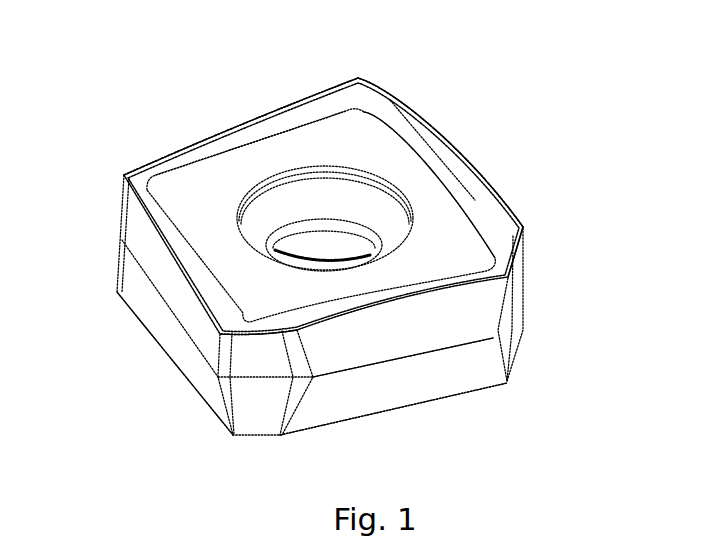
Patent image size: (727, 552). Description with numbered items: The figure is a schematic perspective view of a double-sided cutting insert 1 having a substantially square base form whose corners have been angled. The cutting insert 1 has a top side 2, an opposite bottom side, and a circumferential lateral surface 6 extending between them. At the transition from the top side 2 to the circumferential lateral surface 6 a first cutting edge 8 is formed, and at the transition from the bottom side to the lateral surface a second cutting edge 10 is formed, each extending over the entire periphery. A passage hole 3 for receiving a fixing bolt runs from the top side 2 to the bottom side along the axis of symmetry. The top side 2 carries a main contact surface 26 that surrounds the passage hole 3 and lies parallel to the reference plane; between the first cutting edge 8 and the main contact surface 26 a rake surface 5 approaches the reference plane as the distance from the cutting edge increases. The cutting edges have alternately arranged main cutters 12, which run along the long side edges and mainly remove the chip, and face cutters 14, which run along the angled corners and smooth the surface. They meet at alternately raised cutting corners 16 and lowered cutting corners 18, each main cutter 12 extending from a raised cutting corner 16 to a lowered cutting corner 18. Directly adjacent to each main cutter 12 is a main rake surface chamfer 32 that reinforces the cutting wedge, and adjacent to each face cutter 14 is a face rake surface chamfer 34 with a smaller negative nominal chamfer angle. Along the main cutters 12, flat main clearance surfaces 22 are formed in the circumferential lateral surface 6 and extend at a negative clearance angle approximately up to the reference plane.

The double-sided cutting insert 1 is at (150, 70).
The top side 2 is at (390, 150).
The passage hole 3 is at (320, 263).
The rake surface 5 is at (332, 97).
The circumferential lateral surface 6 is at (377, 373).
The first cutting edge 8 is at (457, 148).
The second cutting edge 10 is at (388, 410).
The main cutter 12 is at (233, 126).
The face cutter 14 is at (388, 92).
The raised cutting corner 16 is at (358, 78).
The lowered cutting corner 18 is at (407, 99).
The main clearance surface 22 is at (160, 272).
The main contact surface 26 is at (297, 157).
The main rake surface chamfer 32 is at (180, 143).
The face rake surface chamfer 34 is at (121, 178).